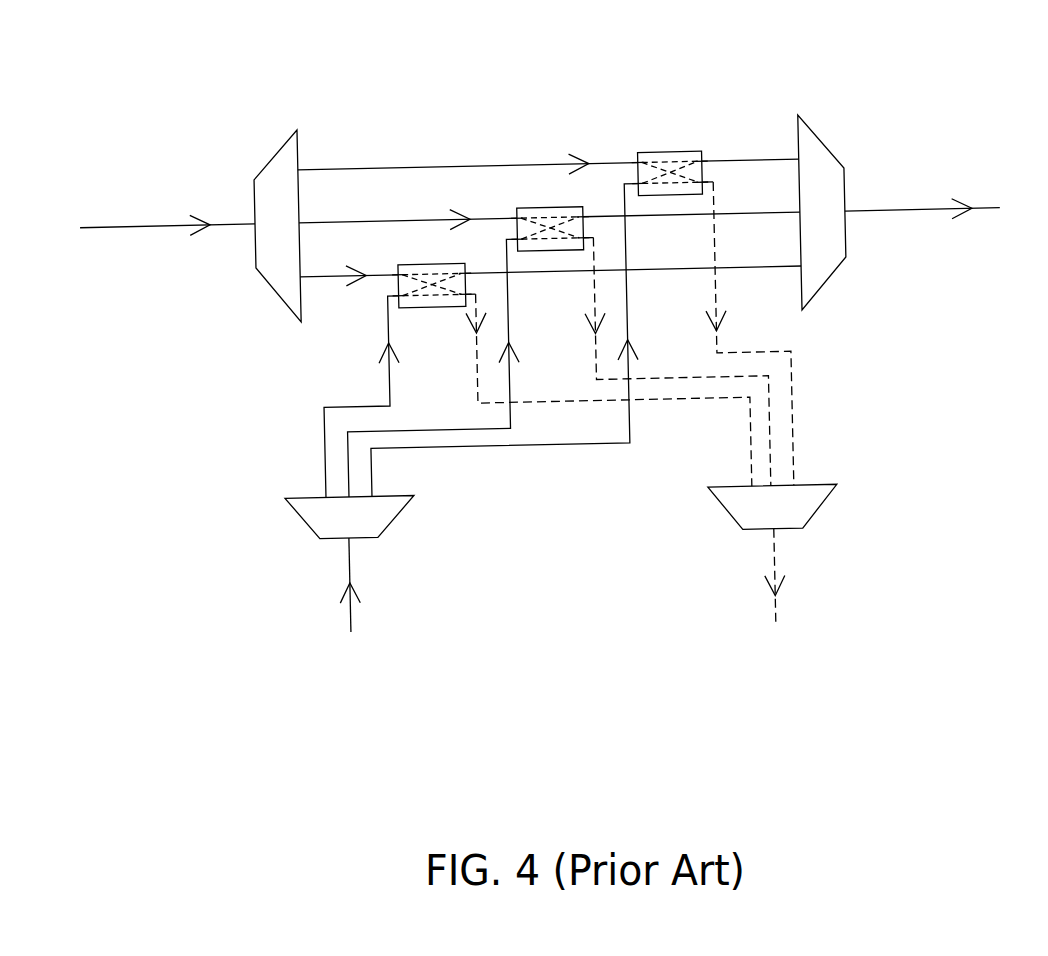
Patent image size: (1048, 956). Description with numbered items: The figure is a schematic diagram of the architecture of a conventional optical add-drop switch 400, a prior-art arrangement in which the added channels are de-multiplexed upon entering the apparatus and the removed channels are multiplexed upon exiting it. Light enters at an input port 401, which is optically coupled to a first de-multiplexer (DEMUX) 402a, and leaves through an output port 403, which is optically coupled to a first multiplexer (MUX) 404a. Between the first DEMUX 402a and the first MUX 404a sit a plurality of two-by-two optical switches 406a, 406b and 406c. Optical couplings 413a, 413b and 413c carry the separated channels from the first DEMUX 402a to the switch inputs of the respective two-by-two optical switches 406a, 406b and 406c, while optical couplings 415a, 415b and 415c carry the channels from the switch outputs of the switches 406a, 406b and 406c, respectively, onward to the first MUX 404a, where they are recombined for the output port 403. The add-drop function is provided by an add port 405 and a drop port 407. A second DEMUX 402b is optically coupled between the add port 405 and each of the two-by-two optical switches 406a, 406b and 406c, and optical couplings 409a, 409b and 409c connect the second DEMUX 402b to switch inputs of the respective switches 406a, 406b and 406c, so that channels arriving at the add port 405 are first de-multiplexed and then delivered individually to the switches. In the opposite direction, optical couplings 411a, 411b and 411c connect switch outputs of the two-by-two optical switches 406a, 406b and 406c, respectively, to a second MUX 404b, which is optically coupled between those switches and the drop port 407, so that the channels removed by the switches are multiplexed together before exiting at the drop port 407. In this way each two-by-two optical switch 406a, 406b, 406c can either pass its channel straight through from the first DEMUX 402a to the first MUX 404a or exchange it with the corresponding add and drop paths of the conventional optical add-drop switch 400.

The conventional optical add-drop switch 400 is at (228, 42).
The input port 401 is at (131, 223).
The first de-multiplexer (DEMUX) 402a is at (297, 131).
The second DEMUX 402b is at (279, 498).
The output port 403 is at (991, 223).
The first multiplexer (MUX) 404a is at (803, 130).
The second MUX 404b is at (831, 496).
The add port 405 is at (342, 618).
The 2×2 optical switch 406a is at (449, 267).
The 2×2 optical switch 406b is at (517, 213).
The 2×2 optical switch 406c is at (639, 160).
The drop port 407 is at (768, 619).
The optical coupling 409a is at (326, 408).
The optical coupling 409b is at (464, 432).
The optical coupling 409c is at (597, 450).
The optical coupling 411a is at (523, 407).
The optical coupling 411b is at (642, 386).
The optical coupling 411c is at (739, 362).
The optical coupling 413a is at (380, 277).
The optical coupling 413b is at (403, 223).
The optical coupling 413c is at (412, 170).
The optical coupling 415a is at (731, 277).
The optical coupling 415b is at (730, 223).
The optical coupling 415c is at (729, 170).